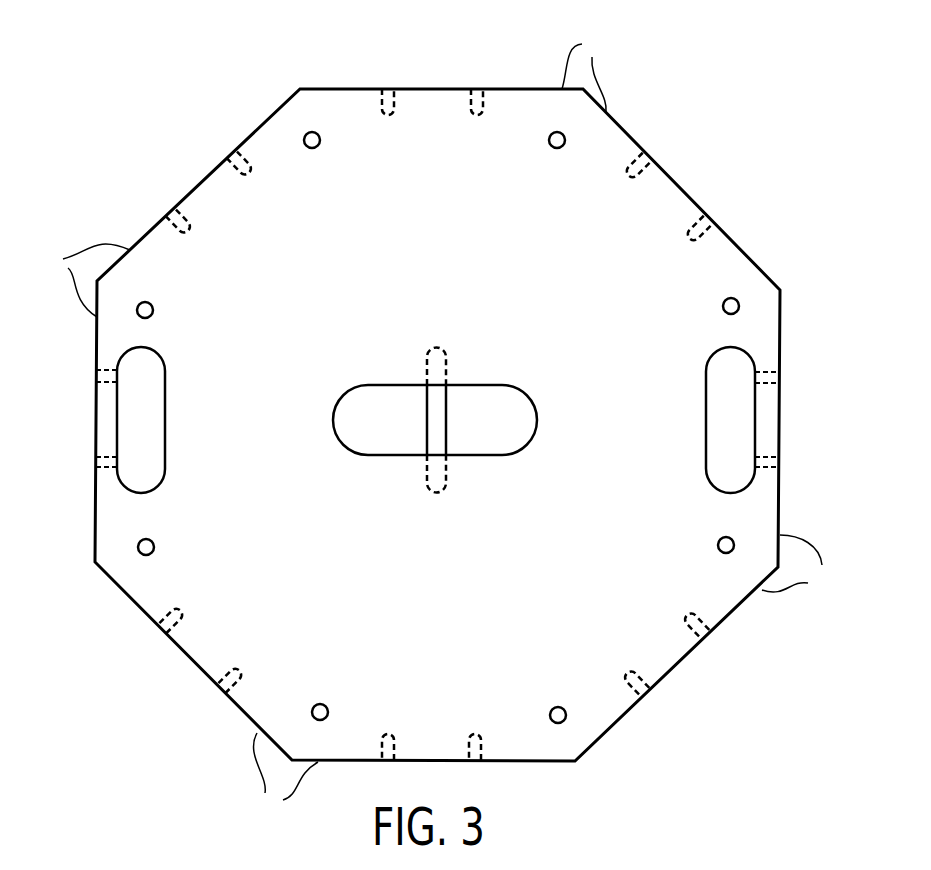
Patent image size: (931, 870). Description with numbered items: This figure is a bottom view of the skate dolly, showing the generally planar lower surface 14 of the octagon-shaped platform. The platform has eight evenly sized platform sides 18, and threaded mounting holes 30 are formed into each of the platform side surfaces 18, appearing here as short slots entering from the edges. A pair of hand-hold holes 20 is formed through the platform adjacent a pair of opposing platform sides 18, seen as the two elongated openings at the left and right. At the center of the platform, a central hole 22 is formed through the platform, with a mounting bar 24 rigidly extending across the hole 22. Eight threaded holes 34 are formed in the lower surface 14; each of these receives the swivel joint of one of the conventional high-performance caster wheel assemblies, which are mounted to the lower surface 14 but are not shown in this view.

The lower surface 14 is at (442, 569).
The platform sides 18 is at (436, 424).
The hand-hold holes 20 is at (163, 400).
The central hole 22 is at (538, 412).
The mounting bar 24 is at (445, 405).
The threaded mounting holes 30 is at (480, 88).
The threaded holes 34 is at (320, 143).